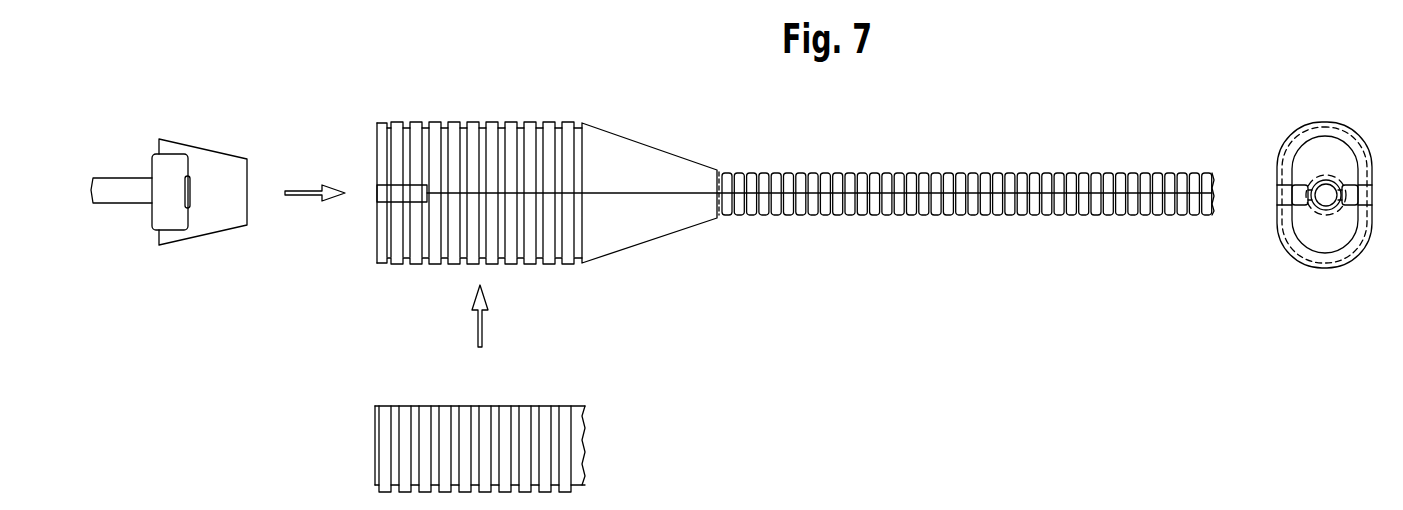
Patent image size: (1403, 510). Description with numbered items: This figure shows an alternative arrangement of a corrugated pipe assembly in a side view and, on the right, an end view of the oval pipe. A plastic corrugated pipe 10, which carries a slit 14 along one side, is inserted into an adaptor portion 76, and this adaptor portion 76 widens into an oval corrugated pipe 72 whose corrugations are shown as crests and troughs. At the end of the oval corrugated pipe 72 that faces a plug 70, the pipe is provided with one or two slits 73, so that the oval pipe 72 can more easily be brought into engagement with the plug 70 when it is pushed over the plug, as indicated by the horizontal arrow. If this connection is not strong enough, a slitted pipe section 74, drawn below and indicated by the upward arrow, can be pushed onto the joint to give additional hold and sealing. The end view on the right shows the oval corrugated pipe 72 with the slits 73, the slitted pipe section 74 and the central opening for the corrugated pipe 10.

The corrugated pipe 10 is at (892, 175).
The slit 14 is at (1030, 193).
The plug 70 is at (198, 157).
The oval corrugated pipe 72 is at (463, 138).
The slits 73 is at (392, 189).
The slitted pipe section 74 is at (575, 452).
The adaptor portion 76 is at (657, 222).